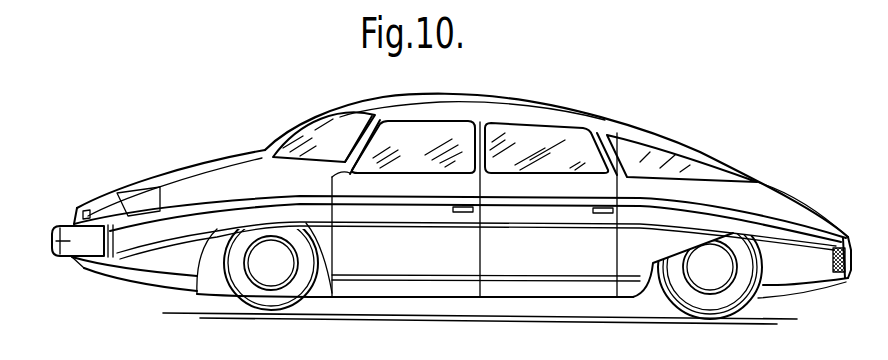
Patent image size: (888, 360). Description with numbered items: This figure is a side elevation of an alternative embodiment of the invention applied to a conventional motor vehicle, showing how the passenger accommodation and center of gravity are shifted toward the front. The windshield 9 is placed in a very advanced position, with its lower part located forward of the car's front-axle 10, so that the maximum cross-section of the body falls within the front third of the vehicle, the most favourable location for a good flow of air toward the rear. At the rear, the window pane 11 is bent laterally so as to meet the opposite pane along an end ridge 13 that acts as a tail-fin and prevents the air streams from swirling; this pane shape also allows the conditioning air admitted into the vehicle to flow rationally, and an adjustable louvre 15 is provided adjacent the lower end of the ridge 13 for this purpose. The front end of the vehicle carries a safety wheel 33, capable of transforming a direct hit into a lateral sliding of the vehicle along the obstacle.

The windshield 9 is at (283, 142).
The front-axle 10 is at (238, 280).
The rear window pane 11 is at (710, 172).
The end ridge 13 is at (693, 147).
The adjustable louvre 15 is at (757, 179).
The safety wheel 33 is at (63, 226).